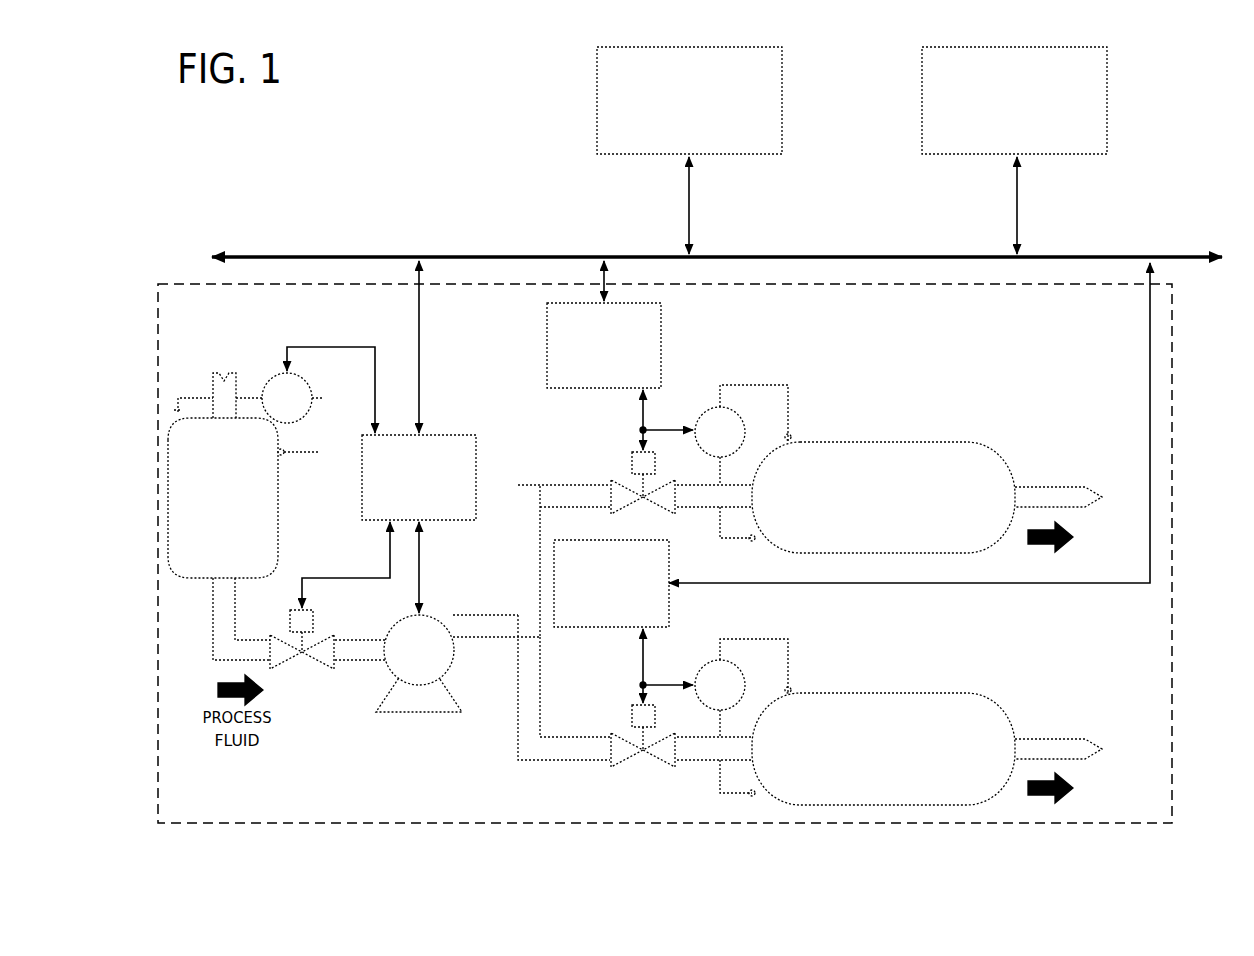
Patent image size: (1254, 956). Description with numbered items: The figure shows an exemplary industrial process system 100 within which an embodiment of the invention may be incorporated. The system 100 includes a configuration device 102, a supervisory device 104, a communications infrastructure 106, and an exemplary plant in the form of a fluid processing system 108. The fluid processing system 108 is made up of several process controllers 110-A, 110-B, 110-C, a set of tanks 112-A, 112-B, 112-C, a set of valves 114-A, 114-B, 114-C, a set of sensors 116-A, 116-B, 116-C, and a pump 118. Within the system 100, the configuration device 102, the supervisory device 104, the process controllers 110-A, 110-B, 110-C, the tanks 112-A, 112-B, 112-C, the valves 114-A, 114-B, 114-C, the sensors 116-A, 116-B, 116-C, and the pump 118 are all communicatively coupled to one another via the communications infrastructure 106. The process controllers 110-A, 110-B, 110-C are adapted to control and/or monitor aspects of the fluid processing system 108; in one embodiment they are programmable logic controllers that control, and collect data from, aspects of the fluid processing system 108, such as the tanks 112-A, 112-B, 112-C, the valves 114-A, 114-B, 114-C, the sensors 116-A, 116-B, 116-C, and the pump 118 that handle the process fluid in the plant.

The system 100 is at (487, 90).
The configuration device 102 is at (782, 72).
The supervisory device 104 is at (1107, 80).
The communications infrastructure 106 is at (282, 255).
The fluid processing system 108 is at (1172, 355).
The process controller 110-A is at (476, 440).
The process controller 110-B is at (661, 338).
The process controller 110-C is at (595, 628).
The tank 112-A is at (278, 518).
The tank 112-B is at (903, 442).
The tank 112-C is at (903, 693).
The valve 114-A is at (315, 622).
The valve 114-B is at (633, 462).
The valve 114-C is at (633, 717).
The sensor 116-A is at (270, 385).
The sensor 116-B is at (702, 412).
The sensor 116-C is at (702, 664).
The pump 118 is at (418, 712).